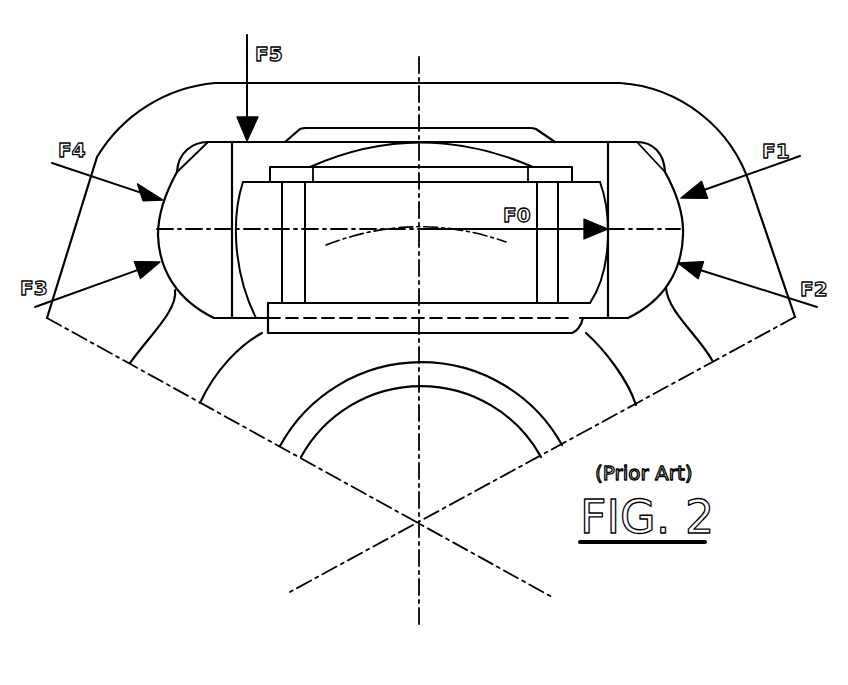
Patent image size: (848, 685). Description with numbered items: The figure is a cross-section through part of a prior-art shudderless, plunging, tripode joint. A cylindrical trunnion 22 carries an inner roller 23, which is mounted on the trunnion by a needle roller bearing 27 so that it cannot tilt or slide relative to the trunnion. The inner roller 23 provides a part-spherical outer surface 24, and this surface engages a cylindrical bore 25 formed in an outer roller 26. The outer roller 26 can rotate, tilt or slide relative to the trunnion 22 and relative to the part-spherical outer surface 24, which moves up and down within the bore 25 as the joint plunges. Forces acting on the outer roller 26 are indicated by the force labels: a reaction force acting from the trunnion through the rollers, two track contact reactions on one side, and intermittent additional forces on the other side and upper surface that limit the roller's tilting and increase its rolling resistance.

The trunnion 22 is at (446, 200).
The inner roller 23 is at (577, 197).
The part-spherical outer surface 24 is at (608, 190).
The cylindrical bore 25 is at (597, 315).
The outer roller 26 is at (627, 280).
The needle roller bearing 27 is at (293, 273).